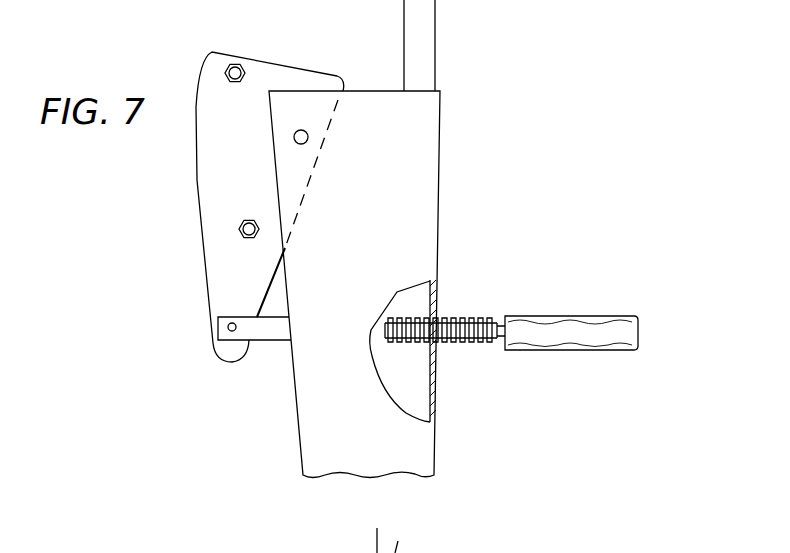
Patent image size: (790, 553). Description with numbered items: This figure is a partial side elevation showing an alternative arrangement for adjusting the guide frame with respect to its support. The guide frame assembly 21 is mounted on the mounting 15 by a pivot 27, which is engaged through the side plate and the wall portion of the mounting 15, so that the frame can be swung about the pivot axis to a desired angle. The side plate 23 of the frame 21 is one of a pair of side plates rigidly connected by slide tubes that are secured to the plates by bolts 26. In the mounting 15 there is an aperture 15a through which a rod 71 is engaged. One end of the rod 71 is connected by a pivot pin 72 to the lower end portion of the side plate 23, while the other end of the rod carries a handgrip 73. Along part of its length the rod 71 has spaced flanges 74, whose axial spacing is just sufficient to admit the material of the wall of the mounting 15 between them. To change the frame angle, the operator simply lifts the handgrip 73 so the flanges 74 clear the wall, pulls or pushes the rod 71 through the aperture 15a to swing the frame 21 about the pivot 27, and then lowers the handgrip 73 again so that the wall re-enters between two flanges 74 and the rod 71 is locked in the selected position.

The mounting 15 is at (440, 395).
The aperture 15a is at (440, 311).
The guide frame assembly 21 is at (293, 62).
The side plate 23 is at (228, 290).
The bolts 26 is at (242, 65).
The pivot 27 is at (308, 136).
The rod 71 is at (500, 318).
The pivot pin 72 is at (230, 331).
The handgrip 73 is at (584, 328).
The spaced flanges 74 is at (466, 343).